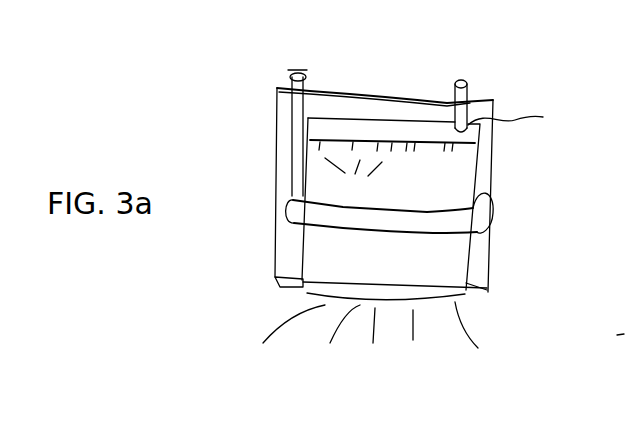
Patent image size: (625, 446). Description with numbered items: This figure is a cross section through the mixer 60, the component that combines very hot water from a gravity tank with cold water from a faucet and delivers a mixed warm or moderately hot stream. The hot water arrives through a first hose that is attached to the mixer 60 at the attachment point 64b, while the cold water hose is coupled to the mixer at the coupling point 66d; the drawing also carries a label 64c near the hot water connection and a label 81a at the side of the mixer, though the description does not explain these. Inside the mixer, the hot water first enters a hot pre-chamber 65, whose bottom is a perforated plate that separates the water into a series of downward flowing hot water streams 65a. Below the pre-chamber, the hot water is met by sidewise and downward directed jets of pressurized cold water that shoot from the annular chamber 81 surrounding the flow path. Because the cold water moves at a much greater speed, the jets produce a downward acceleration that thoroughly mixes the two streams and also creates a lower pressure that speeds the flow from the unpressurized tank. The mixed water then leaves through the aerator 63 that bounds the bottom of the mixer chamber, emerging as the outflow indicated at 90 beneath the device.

The mixer 60 is at (276, 136).
The aerator 63 is at (290, 298).
The first hose attachment point 64b is at (462, 82).
The connector lead 64c is at (534, 113).
The hot pre-chamber 65 is at (477, 137).
The hot water streams 65a is at (365, 180).
The second hose coupling point 66d is at (297, 62).
The annular chamber 81 is at (493, 211).
The strap anchor 81a is at (293, 118).
The heat flow 90 is at (457, 328).